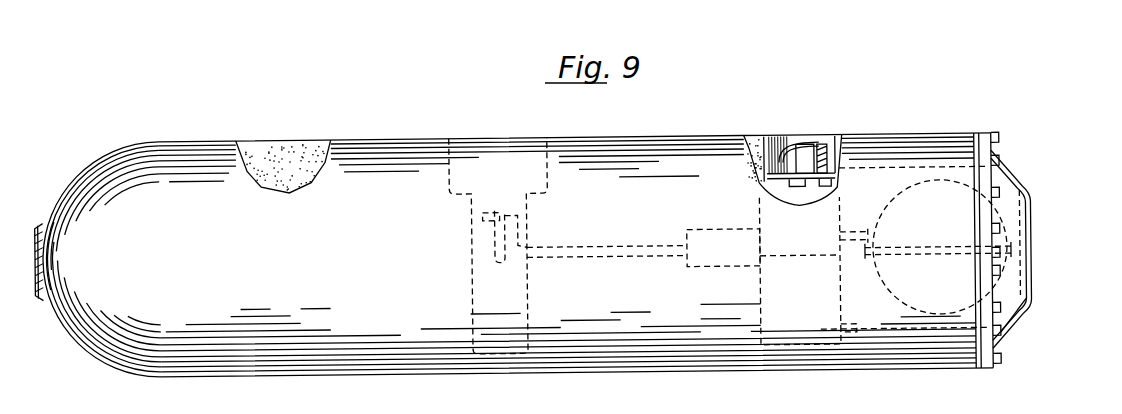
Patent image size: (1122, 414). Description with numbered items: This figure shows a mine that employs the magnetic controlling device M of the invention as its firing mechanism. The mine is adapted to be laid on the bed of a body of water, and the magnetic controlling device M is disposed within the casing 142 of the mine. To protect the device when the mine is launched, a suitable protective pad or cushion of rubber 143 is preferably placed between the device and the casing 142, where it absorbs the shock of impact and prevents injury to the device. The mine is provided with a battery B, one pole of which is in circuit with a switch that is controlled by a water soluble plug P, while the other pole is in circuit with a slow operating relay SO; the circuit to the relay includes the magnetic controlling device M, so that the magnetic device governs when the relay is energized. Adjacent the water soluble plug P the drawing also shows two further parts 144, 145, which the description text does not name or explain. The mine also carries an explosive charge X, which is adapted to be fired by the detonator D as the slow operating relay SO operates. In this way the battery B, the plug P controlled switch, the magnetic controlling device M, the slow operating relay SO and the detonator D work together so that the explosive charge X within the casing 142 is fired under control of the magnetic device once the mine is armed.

The explosive charge X is at (293, 149).
The detonator D is at (495, 206).
The plug body 144 is at (808, 152).
The water soluble plug P is at (828, 147).
The plug insert 145 is at (822, 160).
The magnetic controlling device M is at (940, 222).
The casing 142 is at (960, 240).
The protective pad or cushion of rubber 143 is at (1035, 312).
The slow operating relay SO is at (745, 257).
The battery B is at (833, 304).